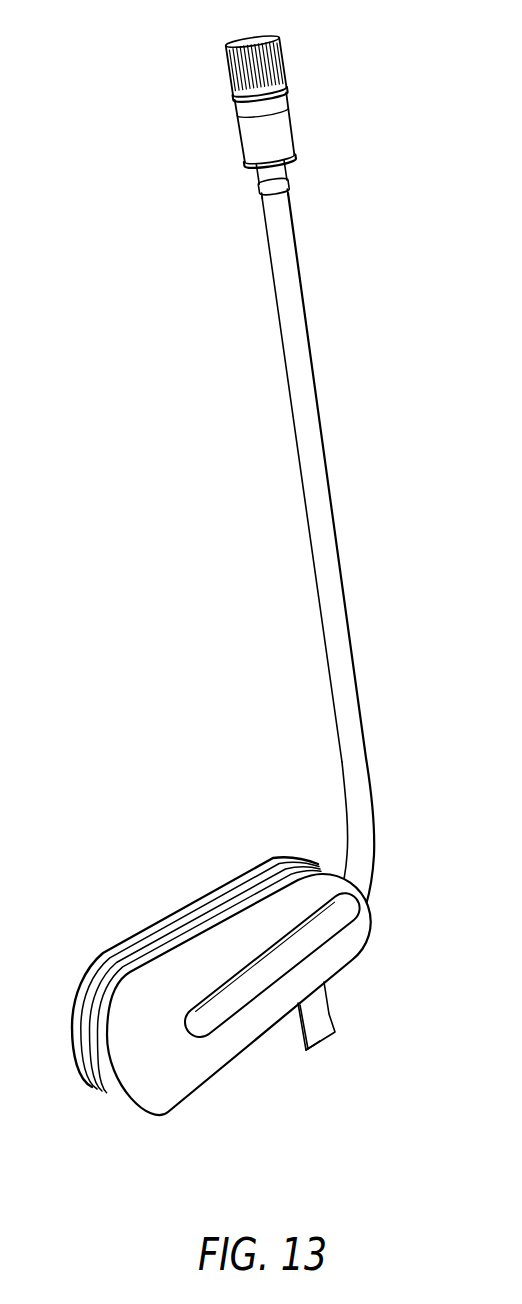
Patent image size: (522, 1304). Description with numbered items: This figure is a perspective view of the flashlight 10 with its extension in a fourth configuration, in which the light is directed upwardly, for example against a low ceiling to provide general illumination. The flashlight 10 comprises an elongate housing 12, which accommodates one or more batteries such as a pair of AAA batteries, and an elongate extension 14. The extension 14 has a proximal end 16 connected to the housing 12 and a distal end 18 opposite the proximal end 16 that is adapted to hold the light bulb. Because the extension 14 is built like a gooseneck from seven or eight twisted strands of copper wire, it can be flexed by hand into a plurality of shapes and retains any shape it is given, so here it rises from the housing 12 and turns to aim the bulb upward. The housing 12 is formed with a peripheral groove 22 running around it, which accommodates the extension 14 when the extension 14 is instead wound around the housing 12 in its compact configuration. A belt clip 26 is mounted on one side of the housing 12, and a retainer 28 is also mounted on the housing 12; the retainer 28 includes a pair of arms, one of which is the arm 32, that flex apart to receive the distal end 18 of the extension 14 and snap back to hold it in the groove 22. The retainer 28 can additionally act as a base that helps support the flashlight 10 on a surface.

The flashlight 10 is at (221, 1009).
The housing 12 is at (177, 1075).
The extension 14 is at (342, 618).
The proximal end 16 is at (380, 858).
The distal end 18 is at (292, 100).
The peripheral groove 22 is at (77, 1027).
The belt clip 26 is at (325, 947).
The retainer 28 is at (308, 1062).
The arm 32 is at (330, 1012).